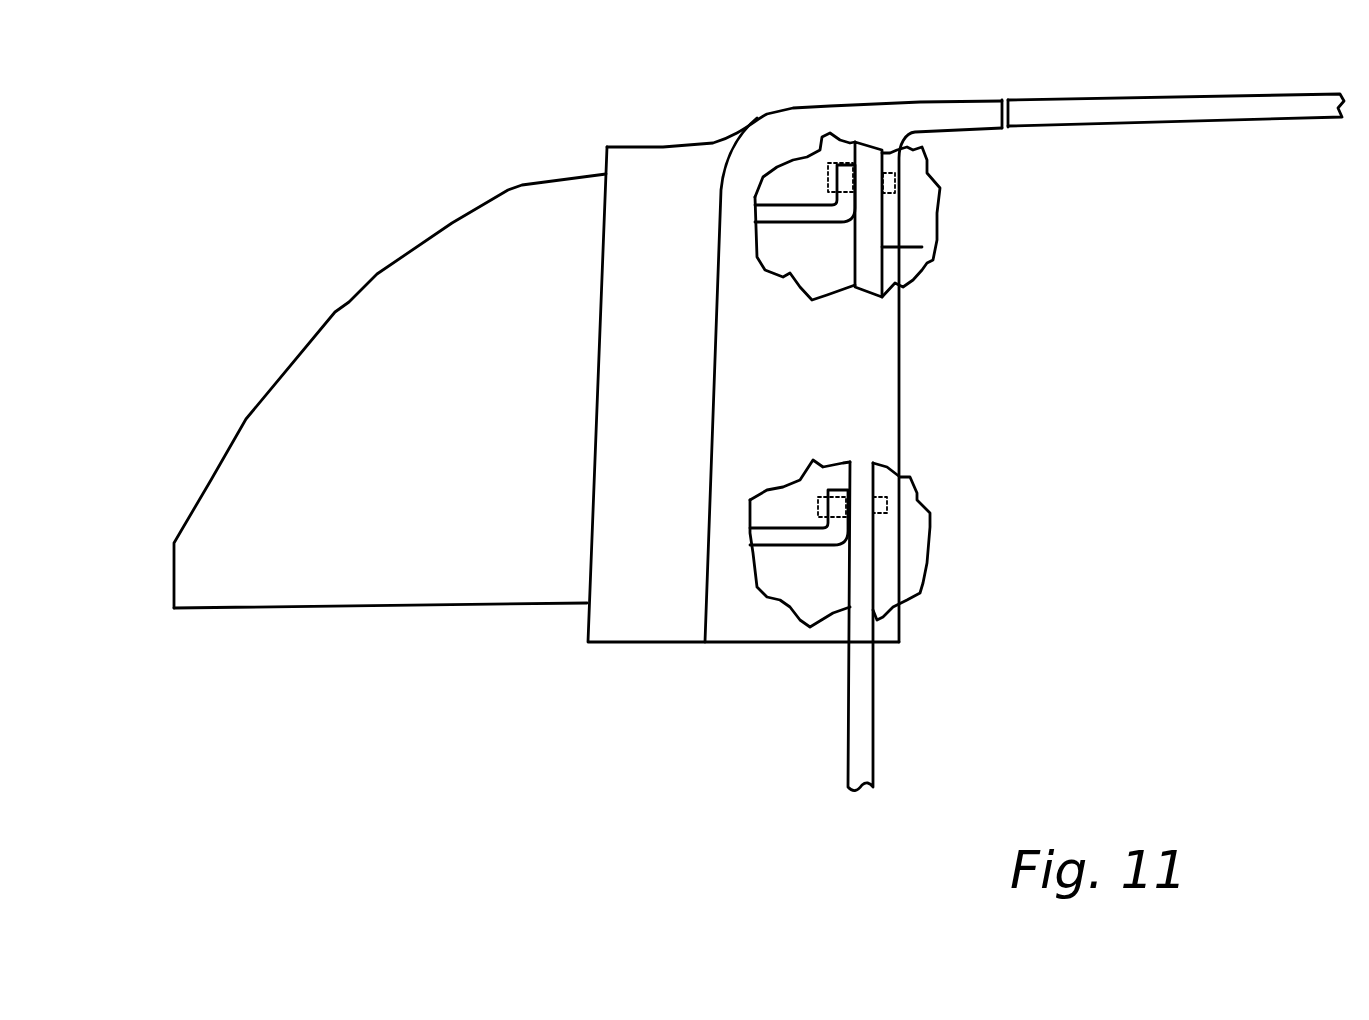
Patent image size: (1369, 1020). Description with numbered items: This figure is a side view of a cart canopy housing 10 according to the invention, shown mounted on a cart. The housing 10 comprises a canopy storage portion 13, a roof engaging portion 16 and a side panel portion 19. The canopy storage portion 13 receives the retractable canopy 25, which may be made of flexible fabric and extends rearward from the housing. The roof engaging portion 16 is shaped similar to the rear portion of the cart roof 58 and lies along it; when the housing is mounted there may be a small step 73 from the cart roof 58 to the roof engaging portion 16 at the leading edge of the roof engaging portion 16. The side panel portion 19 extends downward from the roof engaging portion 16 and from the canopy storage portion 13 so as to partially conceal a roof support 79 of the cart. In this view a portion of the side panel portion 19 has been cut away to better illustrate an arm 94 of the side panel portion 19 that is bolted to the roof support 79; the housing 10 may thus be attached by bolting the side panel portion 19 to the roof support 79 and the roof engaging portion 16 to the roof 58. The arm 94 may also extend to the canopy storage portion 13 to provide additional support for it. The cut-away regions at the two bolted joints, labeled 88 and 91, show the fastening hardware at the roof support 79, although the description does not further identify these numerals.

The cart canopy housing 10 is at (612, 678).
The canopy storage portion 13 is at (652, 252).
The roof engaging portion 16 is at (940, 100).
The side panel portion 19 is at (892, 411).
The retractable canopy 25 is at (171, 571).
The cart roof 58 is at (1210, 122).
The step 73 is at (1007, 95).
The roof support 79 is at (937, 258).
The L-shaped clamp 88 is at (828, 180).
The bracket 91 is at (897, 180).
The arm 94 is at (795, 223).